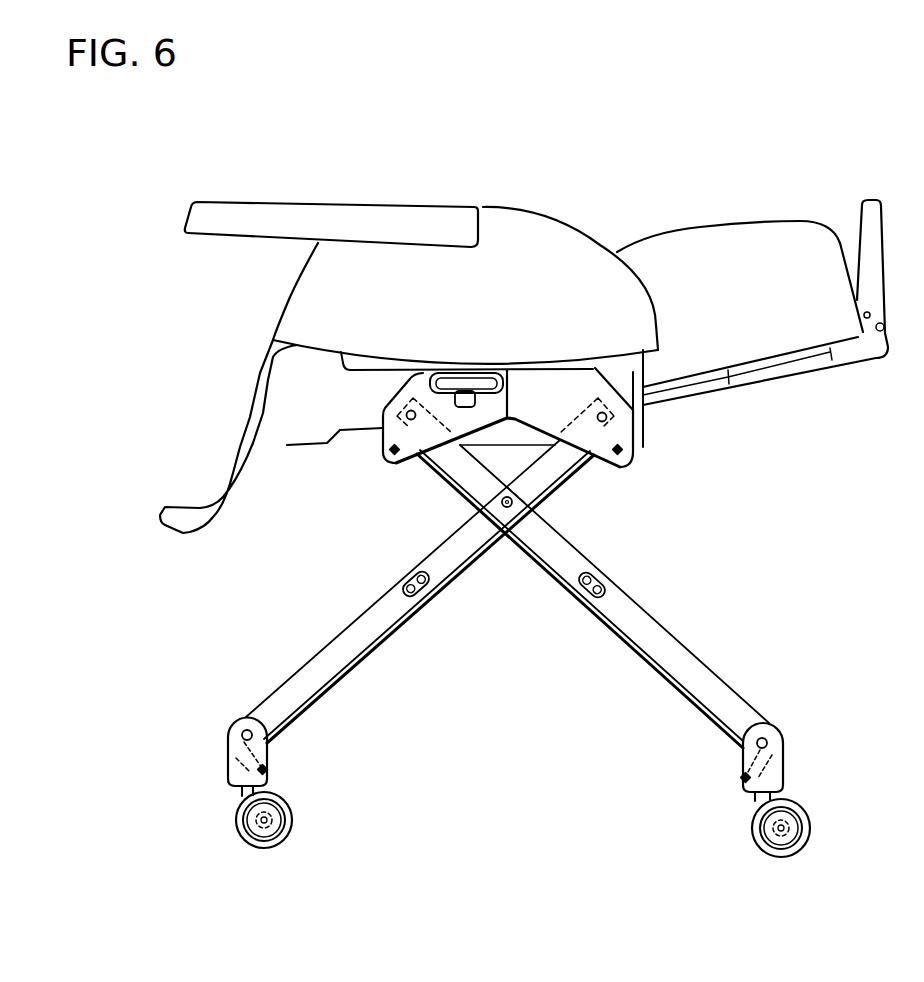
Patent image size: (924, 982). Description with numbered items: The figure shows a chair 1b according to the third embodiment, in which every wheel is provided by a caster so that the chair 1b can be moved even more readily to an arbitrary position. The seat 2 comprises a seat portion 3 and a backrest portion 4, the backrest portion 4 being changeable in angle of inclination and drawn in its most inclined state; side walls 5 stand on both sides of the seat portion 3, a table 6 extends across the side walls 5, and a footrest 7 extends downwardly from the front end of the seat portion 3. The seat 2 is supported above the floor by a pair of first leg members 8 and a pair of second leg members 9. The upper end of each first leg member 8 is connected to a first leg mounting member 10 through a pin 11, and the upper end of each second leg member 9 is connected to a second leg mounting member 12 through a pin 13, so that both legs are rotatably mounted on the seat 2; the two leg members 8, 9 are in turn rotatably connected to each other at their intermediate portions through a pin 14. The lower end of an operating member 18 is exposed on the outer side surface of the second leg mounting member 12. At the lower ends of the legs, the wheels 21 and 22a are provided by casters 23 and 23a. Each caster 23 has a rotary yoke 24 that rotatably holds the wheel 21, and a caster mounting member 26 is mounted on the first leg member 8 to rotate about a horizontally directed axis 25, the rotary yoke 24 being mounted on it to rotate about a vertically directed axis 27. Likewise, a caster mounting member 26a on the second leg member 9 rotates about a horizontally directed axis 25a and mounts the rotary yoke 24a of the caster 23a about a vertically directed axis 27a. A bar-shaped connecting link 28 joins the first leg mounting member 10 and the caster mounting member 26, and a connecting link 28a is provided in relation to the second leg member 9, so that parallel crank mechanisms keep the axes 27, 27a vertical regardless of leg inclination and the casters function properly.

The chair 1b is at (642, 177).
The seat 2 is at (272, 320).
The seat portion 3 is at (327, 403).
The backrest portion 4 is at (750, 350).
The side walls 5 is at (501, 218).
The table 6 is at (262, 205).
The footrest 7 is at (177, 507).
The first leg member 8 is at (348, 632).
The second leg member 9 is at (647, 623).
The first leg mounting member 10 is at (623, 467).
The pin 11 is at (606, 419).
The second leg mounting member 12 is at (398, 466).
The pin 13 is at (407, 419).
The pin 14 is at (506, 509).
The operating member 18 is at (463, 407).
The wheel 21 is at (287, 803).
The wheel 22a is at (811, 818).
The caster 23 is at (297, 833).
The caster 23a is at (826, 849).
The rotary yoke 24 is at (241, 793).
The rotary yoke 24a is at (752, 801).
The horizontally directed axis 25 is at (243, 732).
The horizontally directed axis 25a is at (766, 740).
The caster mounting member 26 is at (232, 752).
The caster mounting member 26a is at (777, 757).
The vertically directed axis 27 is at (238, 788).
The vertically directed axis 27a is at (754, 798).
The connecting link 28 is at (363, 660).
The connecting link 28a is at (623, 643).